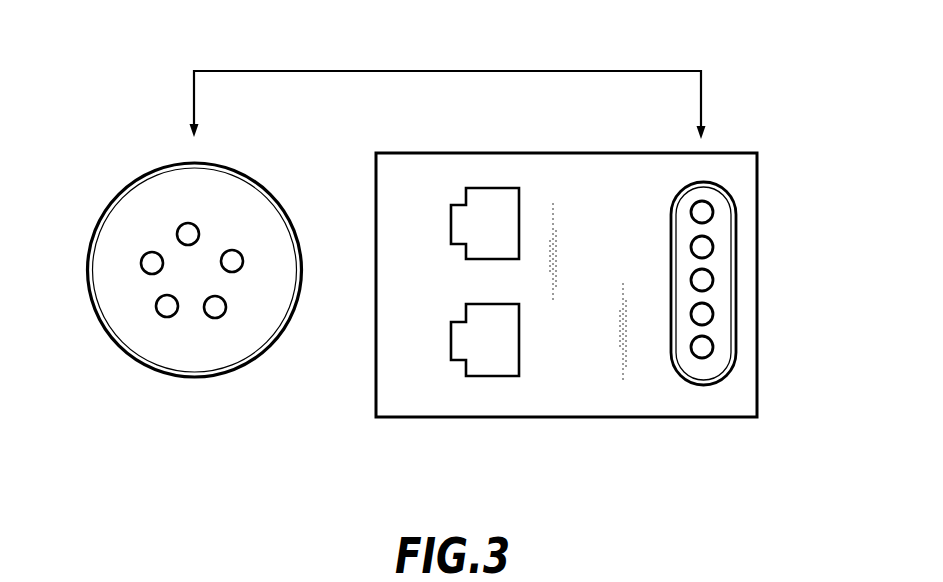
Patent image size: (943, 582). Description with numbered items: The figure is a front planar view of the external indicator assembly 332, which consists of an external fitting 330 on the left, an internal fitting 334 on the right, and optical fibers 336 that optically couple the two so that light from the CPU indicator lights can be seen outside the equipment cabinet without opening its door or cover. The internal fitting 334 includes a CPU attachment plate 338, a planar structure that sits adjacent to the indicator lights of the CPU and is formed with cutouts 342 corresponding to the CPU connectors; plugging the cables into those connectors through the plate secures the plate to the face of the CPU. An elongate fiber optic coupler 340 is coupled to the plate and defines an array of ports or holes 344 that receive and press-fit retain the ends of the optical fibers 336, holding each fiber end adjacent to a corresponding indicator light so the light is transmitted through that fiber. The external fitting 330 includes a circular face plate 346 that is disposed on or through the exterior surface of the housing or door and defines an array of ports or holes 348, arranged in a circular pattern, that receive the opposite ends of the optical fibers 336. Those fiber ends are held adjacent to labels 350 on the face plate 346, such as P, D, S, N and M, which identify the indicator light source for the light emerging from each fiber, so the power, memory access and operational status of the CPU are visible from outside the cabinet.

The external fitting 330 is at (198, 285).
The external indicator assembly 332 is at (536, 313).
The internal fitting 334 is at (566, 393).
The optical fibers 336 is at (701, 97).
The CPU attachment plate 338 is at (707, 416).
The fiber optic coupler 340 is at (723, 301).
The cutouts 342 is at (480, 353).
The ports or holes 344 is at (718, 190).
The face plate 346 is at (232, 183).
The ports or holes 348 is at (212, 322).
The labels 350 is at (273, 187).